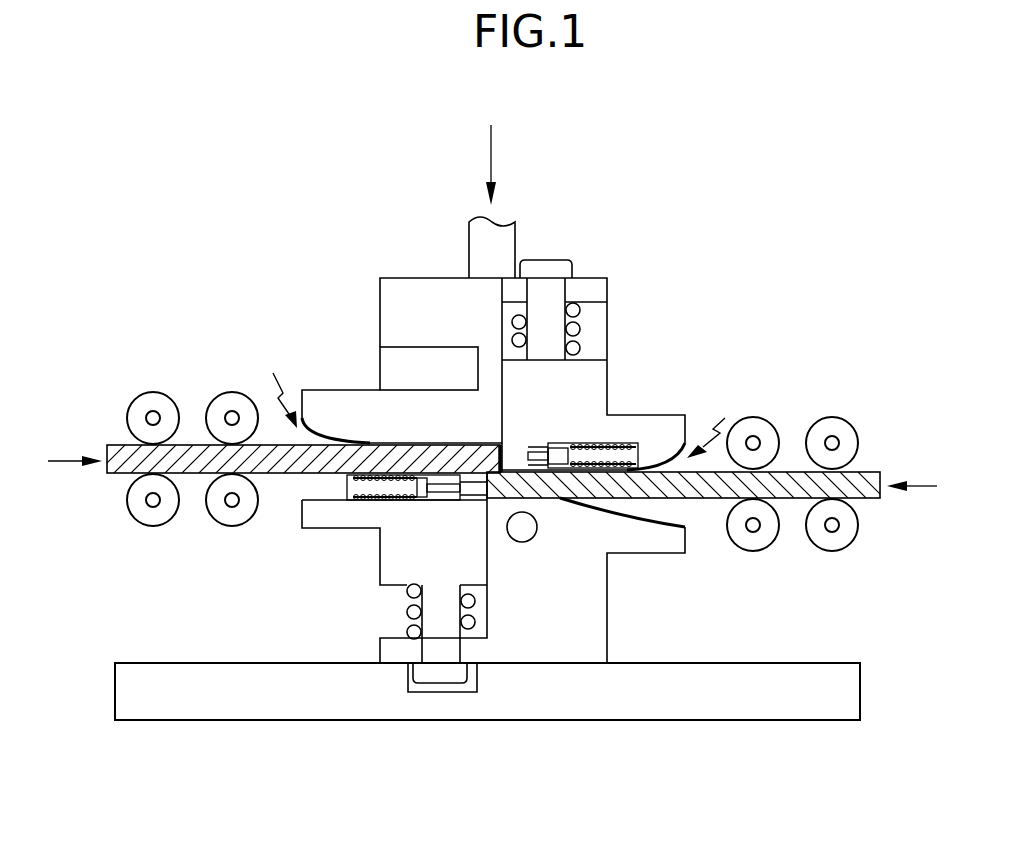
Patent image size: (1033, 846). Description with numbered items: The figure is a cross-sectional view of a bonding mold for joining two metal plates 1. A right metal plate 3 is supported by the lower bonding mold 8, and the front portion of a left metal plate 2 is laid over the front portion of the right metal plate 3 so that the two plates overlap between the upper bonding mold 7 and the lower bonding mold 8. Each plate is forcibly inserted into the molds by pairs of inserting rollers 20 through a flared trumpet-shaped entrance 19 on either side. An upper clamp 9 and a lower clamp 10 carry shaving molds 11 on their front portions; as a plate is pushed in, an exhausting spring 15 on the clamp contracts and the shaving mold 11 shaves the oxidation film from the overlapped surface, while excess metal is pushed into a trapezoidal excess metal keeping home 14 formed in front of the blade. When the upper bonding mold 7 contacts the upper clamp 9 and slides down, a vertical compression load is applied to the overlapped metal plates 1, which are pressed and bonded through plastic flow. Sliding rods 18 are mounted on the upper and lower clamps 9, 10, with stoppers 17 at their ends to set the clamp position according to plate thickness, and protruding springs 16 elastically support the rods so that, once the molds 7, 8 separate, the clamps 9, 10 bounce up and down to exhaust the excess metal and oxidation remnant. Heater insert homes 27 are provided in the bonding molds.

The metal plate 1 is at (300, 477).
The left metal plate 2 is at (478, 445).
The right metal plate 3 is at (568, 503).
The upper bonding mold 7 is at (400, 328).
The lower bonding mold 8 is at (587, 603).
The upper clamp 9 is at (593, 380).
The lower clamp 10 is at (390, 573).
The shaving mold 11 is at (615, 443).
The excess metal keeping home 14 is at (528, 445).
The exhausting spring 15 is at (612, 417).
The protruding spring 16 is at (582, 347).
The stopper 17 is at (570, 272).
The sliding rod 18 is at (548, 328).
The trumpet-shaped entrance 19 is at (499, 401).
The inserting roller 20 is at (153, 527).
The heater insert home 27 is at (395, 368).